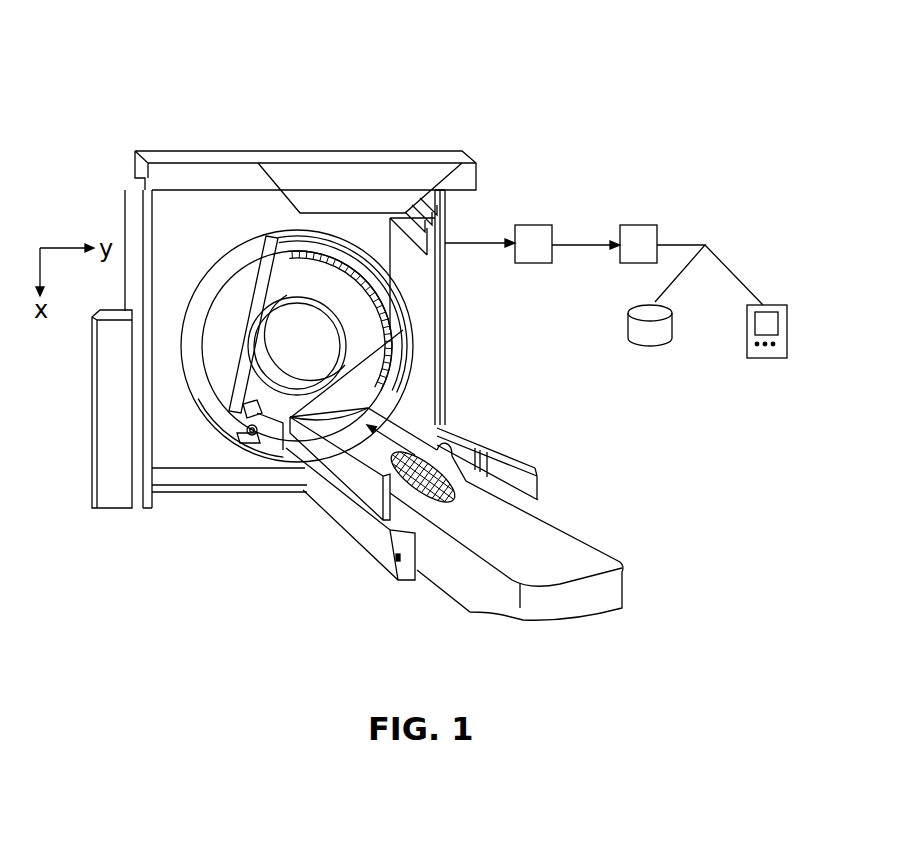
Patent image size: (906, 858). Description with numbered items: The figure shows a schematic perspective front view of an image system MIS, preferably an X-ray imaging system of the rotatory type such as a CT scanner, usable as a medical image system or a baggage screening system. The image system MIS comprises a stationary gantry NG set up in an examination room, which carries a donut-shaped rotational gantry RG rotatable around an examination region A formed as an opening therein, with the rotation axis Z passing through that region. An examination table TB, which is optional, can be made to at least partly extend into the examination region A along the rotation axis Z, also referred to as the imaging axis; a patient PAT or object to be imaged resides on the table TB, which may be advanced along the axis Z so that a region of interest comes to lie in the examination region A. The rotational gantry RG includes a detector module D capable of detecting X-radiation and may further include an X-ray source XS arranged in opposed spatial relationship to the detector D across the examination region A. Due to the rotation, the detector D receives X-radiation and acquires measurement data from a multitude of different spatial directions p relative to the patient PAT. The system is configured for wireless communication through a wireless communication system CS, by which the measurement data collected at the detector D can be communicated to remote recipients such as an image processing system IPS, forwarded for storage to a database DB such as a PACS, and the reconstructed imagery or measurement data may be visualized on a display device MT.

The image system MIS is at (172, 78).
The stationary gantry NG is at (127, 200).
The rotational gantry RG is at (275, 272).
The spatial directions p is at (342, 273).
The detector module D is at (395, 288).
The examination region A is at (305, 337).
The X-ray source XS is at (247, 436).
The rotation axis Z is at (447, 502).
The patient PAT is at (445, 502).
The examination table TB is at (563, 545).
The wireless communication system CS is at (533, 233).
The image processing system IPS is at (642, 233).
The database DB is at (637, 328).
The display device MT is at (748, 322).